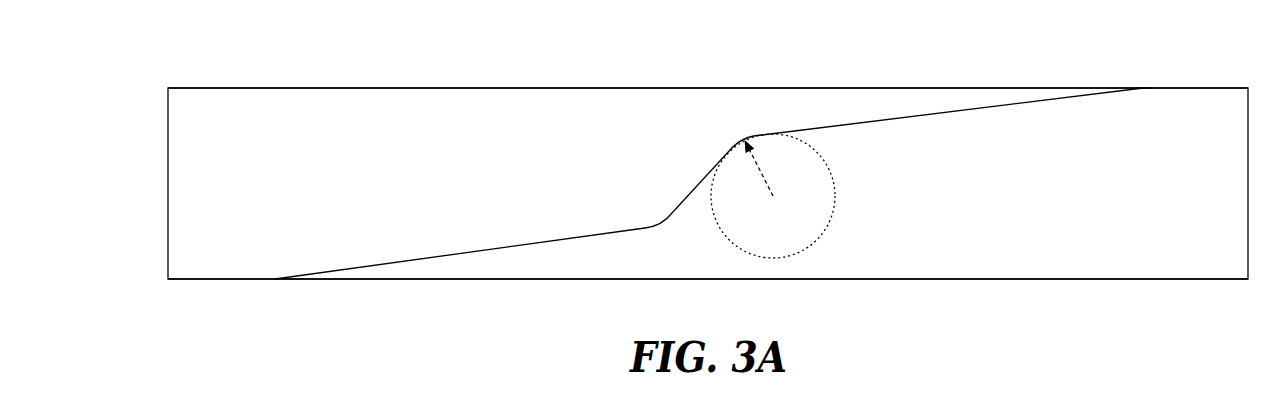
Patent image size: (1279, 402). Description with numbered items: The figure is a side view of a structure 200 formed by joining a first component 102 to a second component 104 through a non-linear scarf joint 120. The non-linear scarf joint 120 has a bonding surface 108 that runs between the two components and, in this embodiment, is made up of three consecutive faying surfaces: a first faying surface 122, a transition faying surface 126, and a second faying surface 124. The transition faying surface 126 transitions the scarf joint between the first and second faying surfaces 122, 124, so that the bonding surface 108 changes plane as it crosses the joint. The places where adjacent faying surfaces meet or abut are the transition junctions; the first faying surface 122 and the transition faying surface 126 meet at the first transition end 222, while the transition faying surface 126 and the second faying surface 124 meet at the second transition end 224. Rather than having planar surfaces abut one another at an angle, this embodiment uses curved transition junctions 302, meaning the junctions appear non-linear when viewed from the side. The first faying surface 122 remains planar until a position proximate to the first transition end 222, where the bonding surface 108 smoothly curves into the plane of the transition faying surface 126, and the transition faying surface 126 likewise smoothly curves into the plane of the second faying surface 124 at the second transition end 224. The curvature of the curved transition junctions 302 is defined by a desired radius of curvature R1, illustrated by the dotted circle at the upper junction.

The structure 200 is at (143, 72).
The first component 102 is at (393, 115).
The second component 104 is at (1163, 262).
The bonding surface 108 is at (709, 162).
The non-linear scarf joint 120 is at (1153, 73).
The first faying surface 122 is at (502, 247).
The second faying surface 124 is at (900, 118).
The transition faying surface 126 is at (697, 192).
The first transition end 222 is at (655, 224).
The second transition end 224 is at (748, 138).
The curved transition junctions 302 is at (684, 158).
The radius of curvature R1 is at (763, 175).